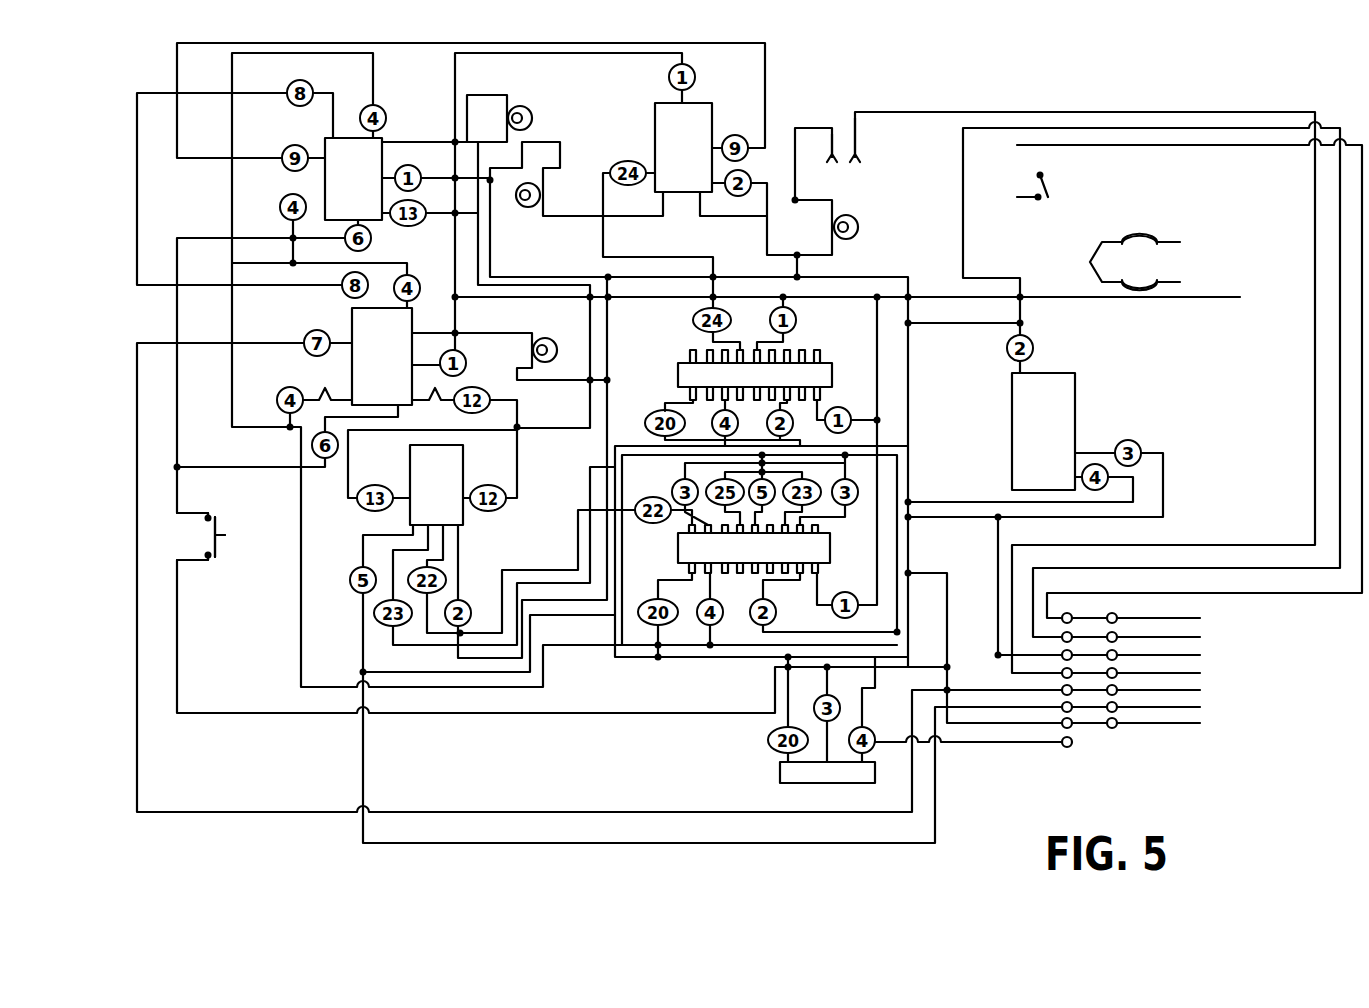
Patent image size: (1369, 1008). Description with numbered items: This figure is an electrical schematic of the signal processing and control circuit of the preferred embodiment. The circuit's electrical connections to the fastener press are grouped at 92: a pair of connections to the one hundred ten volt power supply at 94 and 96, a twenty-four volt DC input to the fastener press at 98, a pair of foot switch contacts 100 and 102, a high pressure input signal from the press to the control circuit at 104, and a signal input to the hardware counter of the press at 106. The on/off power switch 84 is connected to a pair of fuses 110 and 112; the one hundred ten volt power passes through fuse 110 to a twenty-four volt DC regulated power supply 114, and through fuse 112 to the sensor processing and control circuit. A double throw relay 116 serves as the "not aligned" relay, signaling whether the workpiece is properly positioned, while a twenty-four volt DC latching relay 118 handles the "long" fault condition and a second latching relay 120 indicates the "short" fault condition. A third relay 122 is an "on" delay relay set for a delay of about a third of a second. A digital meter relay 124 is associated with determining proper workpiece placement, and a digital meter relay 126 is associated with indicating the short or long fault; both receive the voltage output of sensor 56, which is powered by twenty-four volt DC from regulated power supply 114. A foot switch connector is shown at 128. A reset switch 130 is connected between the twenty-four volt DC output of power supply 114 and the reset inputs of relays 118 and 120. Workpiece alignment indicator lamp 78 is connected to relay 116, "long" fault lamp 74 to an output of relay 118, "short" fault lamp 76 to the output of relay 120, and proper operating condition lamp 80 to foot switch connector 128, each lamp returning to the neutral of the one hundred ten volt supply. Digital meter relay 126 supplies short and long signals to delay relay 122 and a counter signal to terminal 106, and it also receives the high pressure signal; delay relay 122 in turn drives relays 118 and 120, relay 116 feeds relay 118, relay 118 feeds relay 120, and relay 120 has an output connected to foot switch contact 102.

The sensor 56 is at (780, 773).
The long fault condition lamp 74 is at (533, 118).
The short fault condition indicator lamp 76 is at (545, 338).
The workpiece alignment indicator lamp 78 is at (518, 205).
The proper operating condition lamp 80 is at (858, 217).
The on/off power switch 84 is at (1052, 186).
The electrical connections to the fastener press 92 is at (1188, 694).
The 110 volt power supply connection 94 is at (1200, 618).
The 110 volt power supply connection 96 is at (1200, 637).
The 24 volt DC input 98 is at (1200, 655).
The foot switch contact 100 is at (1200, 673).
The foot switch contact 102 is at (1200, 690).
The high pressure input signal connection 104 is at (1200, 707).
The hardware counter signal input 106 is at (1200, 723).
The fuse 110 is at (1147, 228).
The fuse 112 is at (1150, 268).
The 24 volt DC regulated power supply 114 is at (1075, 407).
The double throw relay 116 is at (712, 112).
The 24 volt DC latching relay 118 is at (348, 138).
The 24 volt DC latching relay 120 is at (350, 330).
The on delay relay 122 is at (410, 473).
The digital meter relay 124 is at (832, 368).
The digital meter relay 126 is at (679, 546).
The foot switch connector 128 is at (868, 158).
The reset switch 130 is at (188, 533).